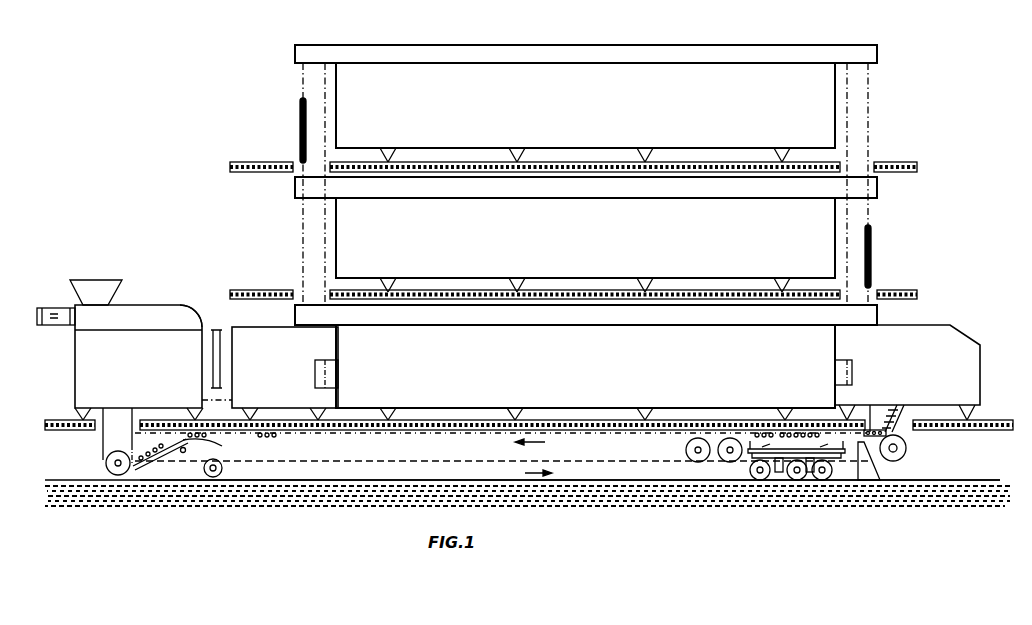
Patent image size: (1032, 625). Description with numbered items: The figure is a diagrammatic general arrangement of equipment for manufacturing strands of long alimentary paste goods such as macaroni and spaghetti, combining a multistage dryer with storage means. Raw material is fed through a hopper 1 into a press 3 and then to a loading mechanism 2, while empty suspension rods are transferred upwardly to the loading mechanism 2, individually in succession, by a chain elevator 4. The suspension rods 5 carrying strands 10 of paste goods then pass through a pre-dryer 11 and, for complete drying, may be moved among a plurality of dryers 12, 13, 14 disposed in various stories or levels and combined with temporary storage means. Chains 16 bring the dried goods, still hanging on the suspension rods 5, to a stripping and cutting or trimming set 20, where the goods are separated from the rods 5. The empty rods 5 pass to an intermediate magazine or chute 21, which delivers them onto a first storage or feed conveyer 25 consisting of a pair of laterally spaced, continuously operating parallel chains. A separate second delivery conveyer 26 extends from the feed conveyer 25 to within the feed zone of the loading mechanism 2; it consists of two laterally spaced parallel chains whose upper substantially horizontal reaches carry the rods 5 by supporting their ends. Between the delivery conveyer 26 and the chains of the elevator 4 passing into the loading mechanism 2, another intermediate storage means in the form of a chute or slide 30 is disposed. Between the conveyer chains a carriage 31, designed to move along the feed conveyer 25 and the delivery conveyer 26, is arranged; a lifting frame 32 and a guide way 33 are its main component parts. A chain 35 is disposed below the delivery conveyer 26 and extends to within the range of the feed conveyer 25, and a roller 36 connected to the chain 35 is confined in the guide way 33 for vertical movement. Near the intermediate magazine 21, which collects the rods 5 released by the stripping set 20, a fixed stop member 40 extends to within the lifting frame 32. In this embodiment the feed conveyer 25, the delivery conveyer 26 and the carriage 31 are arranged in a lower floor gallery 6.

The hopper 1 is at (108, 292).
The loading mechanism 2 is at (138, 367).
The press 3 is at (153, 311).
The chain elevator 4 is at (130, 450).
The suspension rods 5 is at (136, 464).
The lower floor gallery 6 is at (965, 467).
The strands 10 is at (216, 330).
The pre-dryer 11 is at (282, 365).
The dryer 12 is at (583, 341).
The dryer 13 is at (583, 213).
The dryer 14 is at (583, 81).
The chains 16 is at (868, 218).
The stripping and cutting or trimming set 20 is at (912, 360).
The intermediate magazine or chute 21 is at (898, 433).
The feed conveyer 25 is at (882, 470).
The delivery conveyer 26 is at (203, 463).
The chute or slide 30 is at (197, 447).
The carriage 31 is at (820, 483).
The lifting frame 32 is at (797, 441).
The guide way 33 is at (757, 483).
The chain 35 is at (580, 481).
The roller 36 is at (786, 483).
The stop member 40 is at (866, 483).